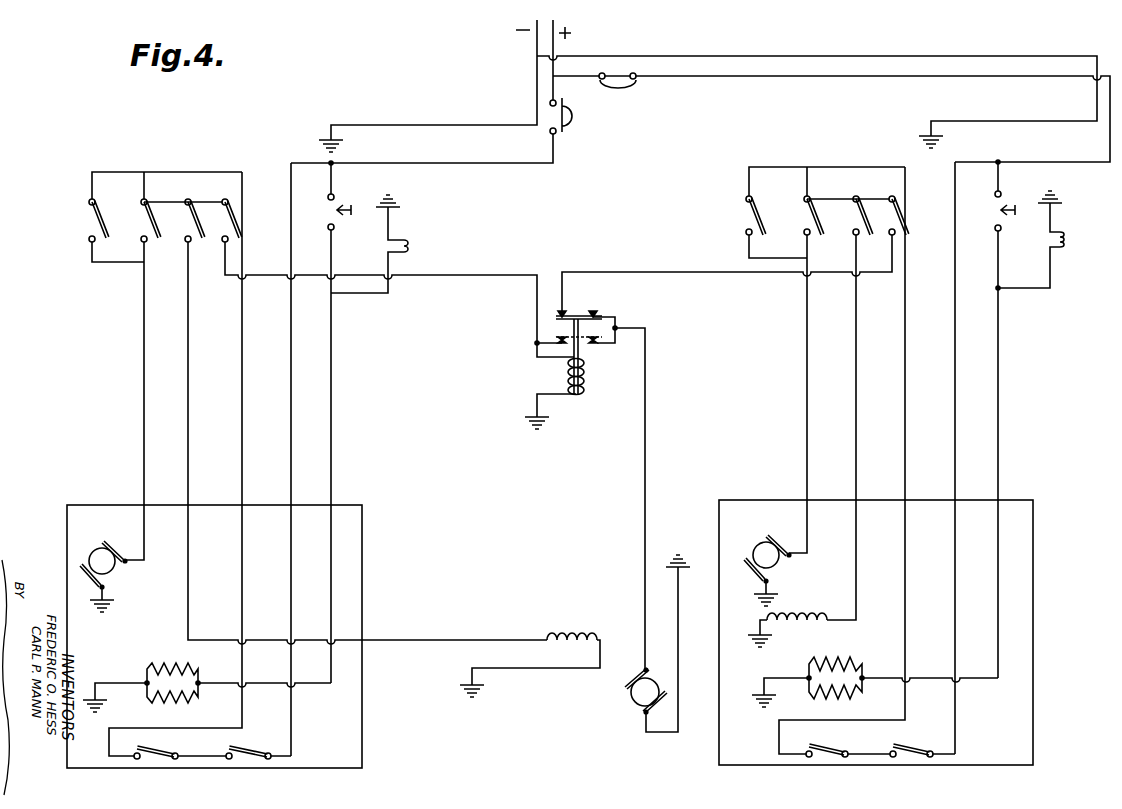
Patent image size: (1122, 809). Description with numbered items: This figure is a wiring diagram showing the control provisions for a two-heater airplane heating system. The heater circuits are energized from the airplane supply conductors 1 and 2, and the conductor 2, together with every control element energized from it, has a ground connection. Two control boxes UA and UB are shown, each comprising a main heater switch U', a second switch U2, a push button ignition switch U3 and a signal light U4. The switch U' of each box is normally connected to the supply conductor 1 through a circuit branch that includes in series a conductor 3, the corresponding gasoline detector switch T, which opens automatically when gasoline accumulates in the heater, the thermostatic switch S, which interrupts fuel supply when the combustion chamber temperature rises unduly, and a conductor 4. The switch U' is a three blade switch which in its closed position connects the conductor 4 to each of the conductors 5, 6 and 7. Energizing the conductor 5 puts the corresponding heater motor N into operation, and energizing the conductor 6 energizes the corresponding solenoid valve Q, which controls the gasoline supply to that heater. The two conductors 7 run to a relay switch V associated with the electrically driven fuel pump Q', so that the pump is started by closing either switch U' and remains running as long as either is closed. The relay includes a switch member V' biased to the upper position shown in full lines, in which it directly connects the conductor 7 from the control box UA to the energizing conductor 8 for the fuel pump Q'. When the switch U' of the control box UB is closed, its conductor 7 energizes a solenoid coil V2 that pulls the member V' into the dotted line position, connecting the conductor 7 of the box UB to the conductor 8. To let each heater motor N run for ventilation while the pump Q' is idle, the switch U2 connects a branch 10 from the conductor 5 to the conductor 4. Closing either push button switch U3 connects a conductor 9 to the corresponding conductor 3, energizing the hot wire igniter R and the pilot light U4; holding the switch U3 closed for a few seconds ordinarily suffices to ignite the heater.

The airplane supply conductor 1 is at (556, 47).
The airplane supply conductor 2 is at (535, 46).
The conductor 3 is at (969, 304).
The conductor 4 is at (917, 309).
The conductor 5 is at (824, 336).
The conductor 6 is at (870, 340).
The conductor 7 is at (655, 260).
The energizing conductor 8 is at (647, 436).
The conductor 9 is at (1010, 329).
The branch 10 is at (749, 252).
The control box UB is at (165, 207).
The control box UA is at (825, 201).
The main heater switch U' is at (526, 207).
The second switch U2 is at (750, 217).
The push button ignition switch U3 is at (334, 228).
The signal light U4 is at (1048, 243).
The relay switch V is at (568, 352).
The switch member V' is at (603, 308).
The solenoid coil V2 is at (587, 378).
The heater motor N is at (435, 573).
The solenoid valve Q is at (643, 647).
The fuel pump Q' is at (657, 643).
The igniter R is at (540, 684).
The thermostatic switch S is at (840, 752).
The safety means T is at (921, 750).